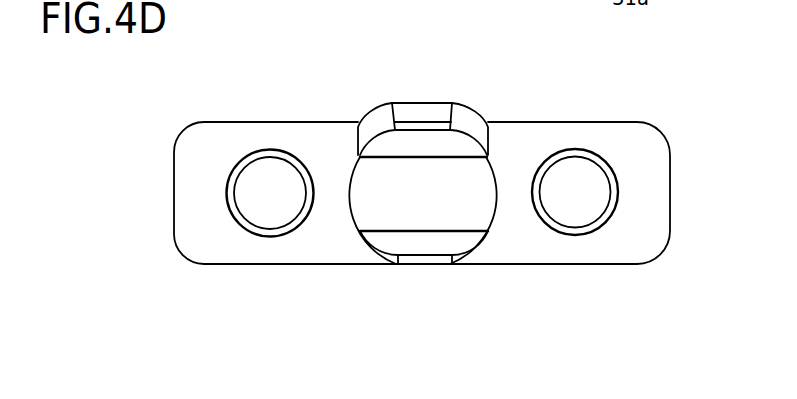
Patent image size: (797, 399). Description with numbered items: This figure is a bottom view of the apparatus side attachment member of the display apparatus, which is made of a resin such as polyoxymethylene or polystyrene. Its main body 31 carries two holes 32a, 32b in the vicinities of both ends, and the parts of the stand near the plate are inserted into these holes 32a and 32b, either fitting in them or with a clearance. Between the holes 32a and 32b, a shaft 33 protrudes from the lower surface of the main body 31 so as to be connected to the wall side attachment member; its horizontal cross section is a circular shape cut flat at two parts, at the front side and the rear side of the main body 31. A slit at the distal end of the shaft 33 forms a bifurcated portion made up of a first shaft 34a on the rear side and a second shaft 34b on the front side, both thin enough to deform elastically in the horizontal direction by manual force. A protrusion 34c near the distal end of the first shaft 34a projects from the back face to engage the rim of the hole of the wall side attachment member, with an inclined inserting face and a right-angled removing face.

The main body 31 is at (671, 190).
The hole 32a is at (267, 215).
The hole 32b is at (577, 216).
The shaft 33 is at (493, 197).
The first shaft 34a is at (415, 147).
The second shaft 34b is at (422, 243).
The protrusion 34c is at (422, 110).